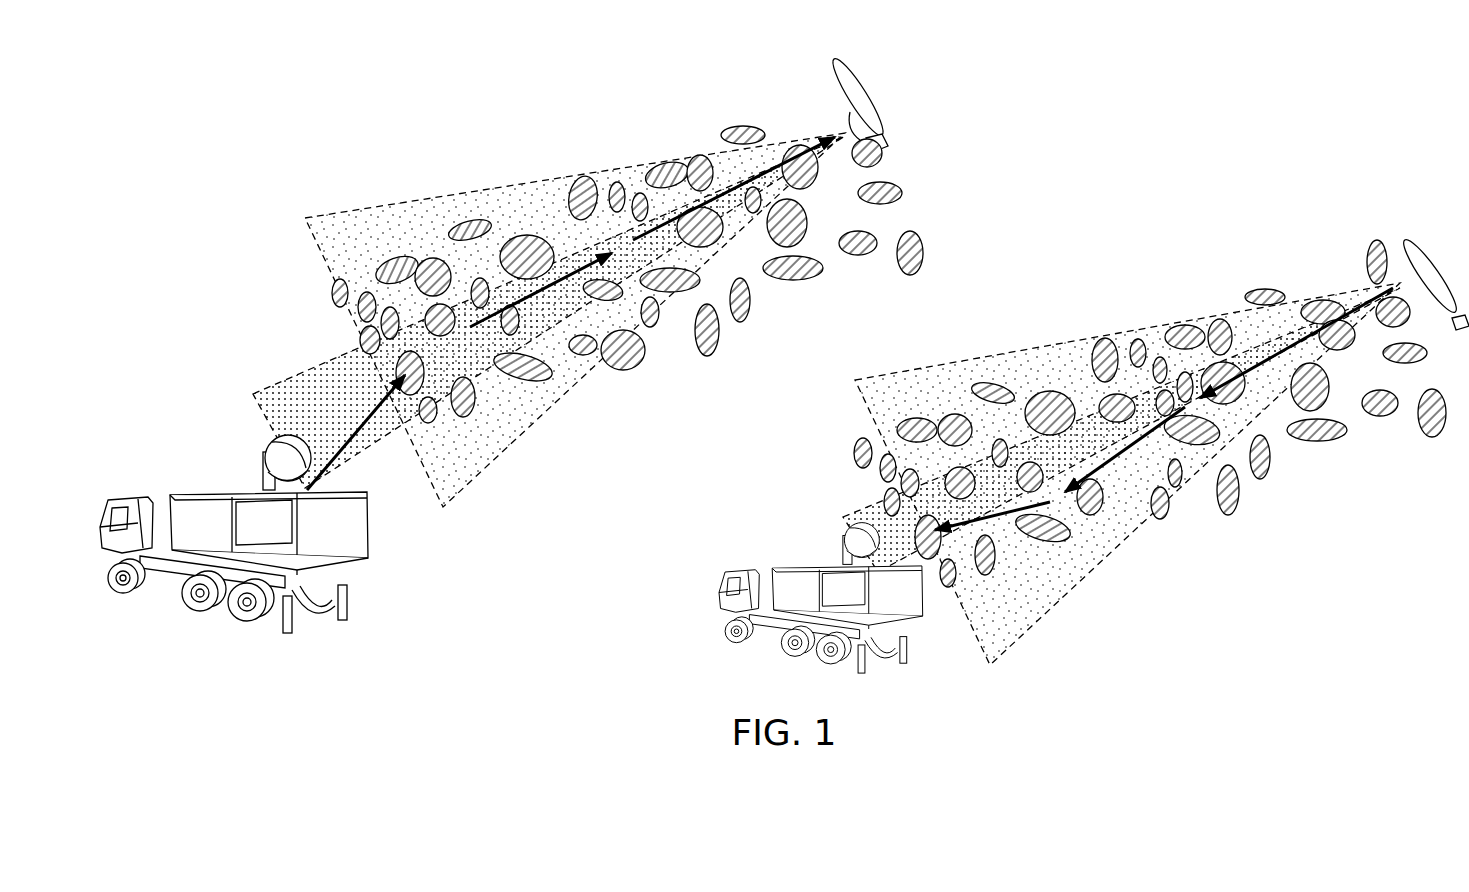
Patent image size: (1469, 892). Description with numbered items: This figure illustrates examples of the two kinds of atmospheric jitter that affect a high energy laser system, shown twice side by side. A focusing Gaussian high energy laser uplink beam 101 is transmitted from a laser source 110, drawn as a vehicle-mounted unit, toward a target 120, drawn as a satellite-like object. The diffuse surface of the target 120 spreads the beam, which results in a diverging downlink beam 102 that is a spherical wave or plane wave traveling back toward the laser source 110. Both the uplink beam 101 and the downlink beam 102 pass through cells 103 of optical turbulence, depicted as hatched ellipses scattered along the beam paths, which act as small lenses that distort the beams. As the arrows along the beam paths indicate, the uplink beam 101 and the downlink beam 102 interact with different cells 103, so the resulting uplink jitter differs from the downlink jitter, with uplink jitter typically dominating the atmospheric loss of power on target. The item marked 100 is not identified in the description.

The communication environment 100 is at (1311, 445).
The uplink beam 101 is at (313, 371).
The downlink beam 102 is at (531, 182).
The cells of optical turbulence 103 is at (928, 247).
The laser source 110 is at (263, 473).
The target 120 is at (862, 72).